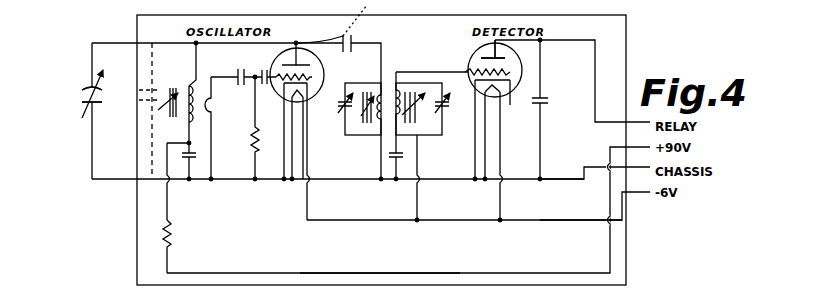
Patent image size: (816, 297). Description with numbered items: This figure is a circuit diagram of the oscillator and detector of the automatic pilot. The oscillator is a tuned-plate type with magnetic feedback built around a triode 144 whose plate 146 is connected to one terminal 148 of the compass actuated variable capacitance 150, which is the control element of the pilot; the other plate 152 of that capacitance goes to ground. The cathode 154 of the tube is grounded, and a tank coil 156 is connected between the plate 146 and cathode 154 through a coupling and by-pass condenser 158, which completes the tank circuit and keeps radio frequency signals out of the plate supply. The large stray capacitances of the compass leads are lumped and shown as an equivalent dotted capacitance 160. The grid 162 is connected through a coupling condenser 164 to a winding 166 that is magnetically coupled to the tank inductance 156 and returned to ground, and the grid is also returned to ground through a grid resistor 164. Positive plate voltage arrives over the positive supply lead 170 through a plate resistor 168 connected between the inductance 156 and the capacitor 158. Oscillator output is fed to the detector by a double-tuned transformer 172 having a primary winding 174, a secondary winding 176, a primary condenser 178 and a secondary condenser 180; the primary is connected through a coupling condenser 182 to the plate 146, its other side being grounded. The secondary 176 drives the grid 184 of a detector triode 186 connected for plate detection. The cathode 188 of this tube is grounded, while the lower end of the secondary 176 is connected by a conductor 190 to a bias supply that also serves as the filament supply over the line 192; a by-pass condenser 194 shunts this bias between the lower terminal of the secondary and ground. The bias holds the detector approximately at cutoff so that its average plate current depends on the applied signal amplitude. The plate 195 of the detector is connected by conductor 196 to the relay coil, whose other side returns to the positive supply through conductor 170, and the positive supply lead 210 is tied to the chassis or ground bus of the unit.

The triode 144 is at (331, 24).
The plate 146 is at (314, 57).
The terminal 148 is at (88, 85).
The compass actuated variable capacitance 150 is at (80, 97).
The plate 152 is at (86, 113).
The cathode 154 is at (307, 100).
The tank coil 156 is at (194, 80).
The coupling and by-pass condenser 158 is at (182, 145).
The equivalent dotted capacitance 160 is at (150, 80).
The grid 162 is at (272, 77).
The coupling condenser 164 is at (238, 70).
The winding 166 is at (214, 104).
The plate resistor 168 is at (171, 236).
The positive supply lead 170 is at (396, 262).
The double-tuned transformer 172 is at (383, 78).
The primary winding 174 is at (368, 125).
The secondary winding 176 is at (398, 80).
The primary condenser 178 is at (340, 108).
The secondary condenser 180 is at (444, 106).
The coupling condenser 182 is at (355, 40).
The grid 184 is at (250, 135).
The detector triode 186 is at (518, 70).
The cathode 188 is at (505, 95).
The conductor 190 is at (417, 190).
The line 192 is at (566, 210).
The by-pass condenser 194 is at (390, 160).
The plate 195 is at (497, 55).
The conductor 196 is at (595, 88).
The positive supply lead 210 is at (555, 179).